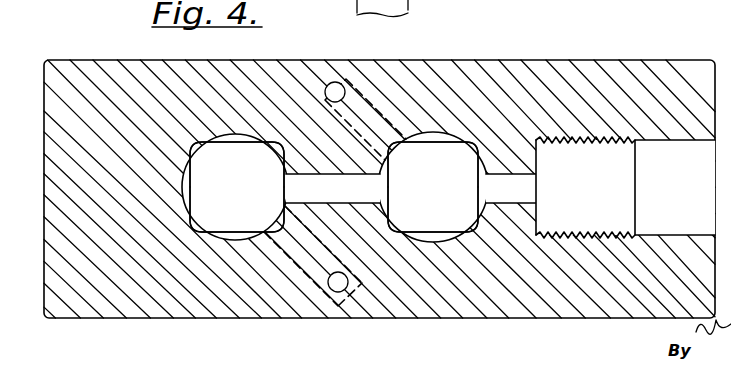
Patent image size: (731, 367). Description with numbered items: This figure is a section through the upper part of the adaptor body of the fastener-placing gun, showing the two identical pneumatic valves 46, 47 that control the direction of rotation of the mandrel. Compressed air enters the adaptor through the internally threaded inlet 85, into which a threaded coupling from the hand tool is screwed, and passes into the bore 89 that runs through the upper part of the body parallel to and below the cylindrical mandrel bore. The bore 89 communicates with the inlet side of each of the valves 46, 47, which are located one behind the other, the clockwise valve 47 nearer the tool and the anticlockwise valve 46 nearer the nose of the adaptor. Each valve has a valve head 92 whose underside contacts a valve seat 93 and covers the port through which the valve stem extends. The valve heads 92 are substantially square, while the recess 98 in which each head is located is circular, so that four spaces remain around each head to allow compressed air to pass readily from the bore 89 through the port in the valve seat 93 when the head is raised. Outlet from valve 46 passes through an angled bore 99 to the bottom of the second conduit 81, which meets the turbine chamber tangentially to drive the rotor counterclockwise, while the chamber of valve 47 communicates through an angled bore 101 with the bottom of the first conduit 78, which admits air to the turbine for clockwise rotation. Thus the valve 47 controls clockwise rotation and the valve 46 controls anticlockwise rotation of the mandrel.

The valve 46 is at (246, 240).
The valve 47 is at (469, 242).
The first conduit 78 is at (335, 87).
The second conduit 81 is at (336, 296).
The internally threaded inlet 85 is at (575, 228).
The bore 89 is at (298, 178).
The valve head 92 is at (232, 238).
The valve seat 93 is at (190, 192).
The recess 98 is at (189, 177).
The angled bore 99 is at (313, 278).
The angled bore 101 is at (363, 100).